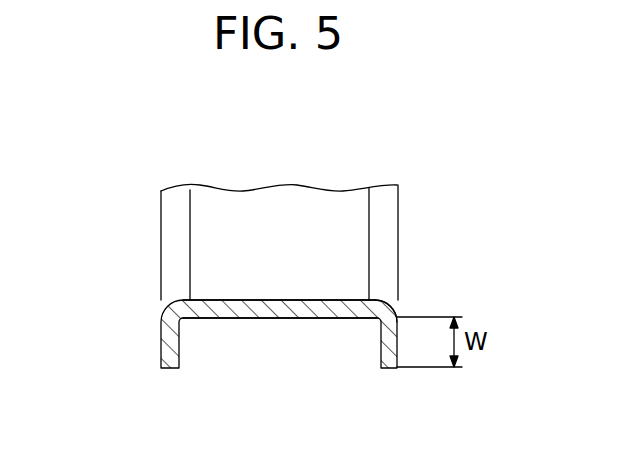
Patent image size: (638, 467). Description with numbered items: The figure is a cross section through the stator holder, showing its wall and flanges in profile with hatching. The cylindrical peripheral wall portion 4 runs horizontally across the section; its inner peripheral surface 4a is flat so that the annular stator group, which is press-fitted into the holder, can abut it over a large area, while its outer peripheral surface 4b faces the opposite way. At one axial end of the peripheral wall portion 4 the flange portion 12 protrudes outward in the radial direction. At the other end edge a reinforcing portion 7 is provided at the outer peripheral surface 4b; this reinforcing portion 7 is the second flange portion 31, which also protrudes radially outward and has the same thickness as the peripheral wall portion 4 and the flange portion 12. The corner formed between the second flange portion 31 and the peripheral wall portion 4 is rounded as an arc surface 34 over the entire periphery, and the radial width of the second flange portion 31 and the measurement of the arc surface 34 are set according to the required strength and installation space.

The peripheral wall portion 4 is at (325, 318).
The inner peripheral surface 4a is at (288, 298).
The outer peripheral surface 4b is at (247, 319).
The flange portion 12 is at (161, 345).
The arc surface 34 is at (392, 312).
The reinforcing portion 7 is at (398, 351).
The second flange portion 31 is at (389, 345).